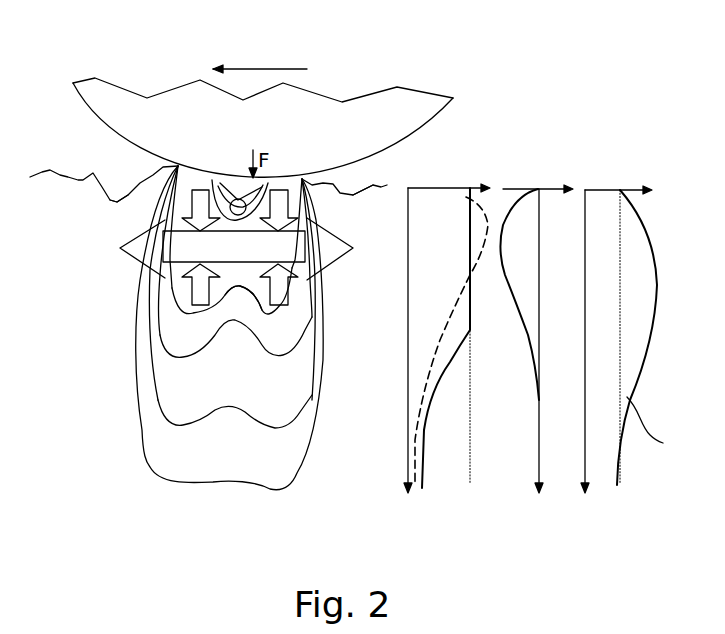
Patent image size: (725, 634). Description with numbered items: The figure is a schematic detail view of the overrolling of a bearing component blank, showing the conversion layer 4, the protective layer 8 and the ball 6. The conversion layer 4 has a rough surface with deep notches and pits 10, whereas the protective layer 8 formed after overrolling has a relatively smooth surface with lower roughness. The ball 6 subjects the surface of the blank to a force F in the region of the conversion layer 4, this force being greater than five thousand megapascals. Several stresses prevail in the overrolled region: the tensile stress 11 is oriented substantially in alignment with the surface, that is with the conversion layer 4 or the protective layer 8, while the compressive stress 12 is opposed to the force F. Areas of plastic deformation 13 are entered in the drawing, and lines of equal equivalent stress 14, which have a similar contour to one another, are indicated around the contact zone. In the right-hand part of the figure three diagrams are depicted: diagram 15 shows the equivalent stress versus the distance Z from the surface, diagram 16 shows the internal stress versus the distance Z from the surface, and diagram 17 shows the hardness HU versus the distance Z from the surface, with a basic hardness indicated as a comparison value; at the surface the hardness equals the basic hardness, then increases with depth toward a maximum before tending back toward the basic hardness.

The conversion layer 4 is at (82, 178).
The ball 6 is at (410, 105).
The protective layer 8 is at (363, 197).
The notches and pits 10 is at (112, 201).
The tensile stress 11 is at (120, 248).
The compressive stress 12 is at (180, 288).
The areas of plastic deformation 13 is at (240, 318).
The lines of equal equivalent stress 14 is at (138, 378).
The diagram 15 is at (439, 343).
The diagram 16 is at (536, 344).
The diagram 17 is at (624, 333).